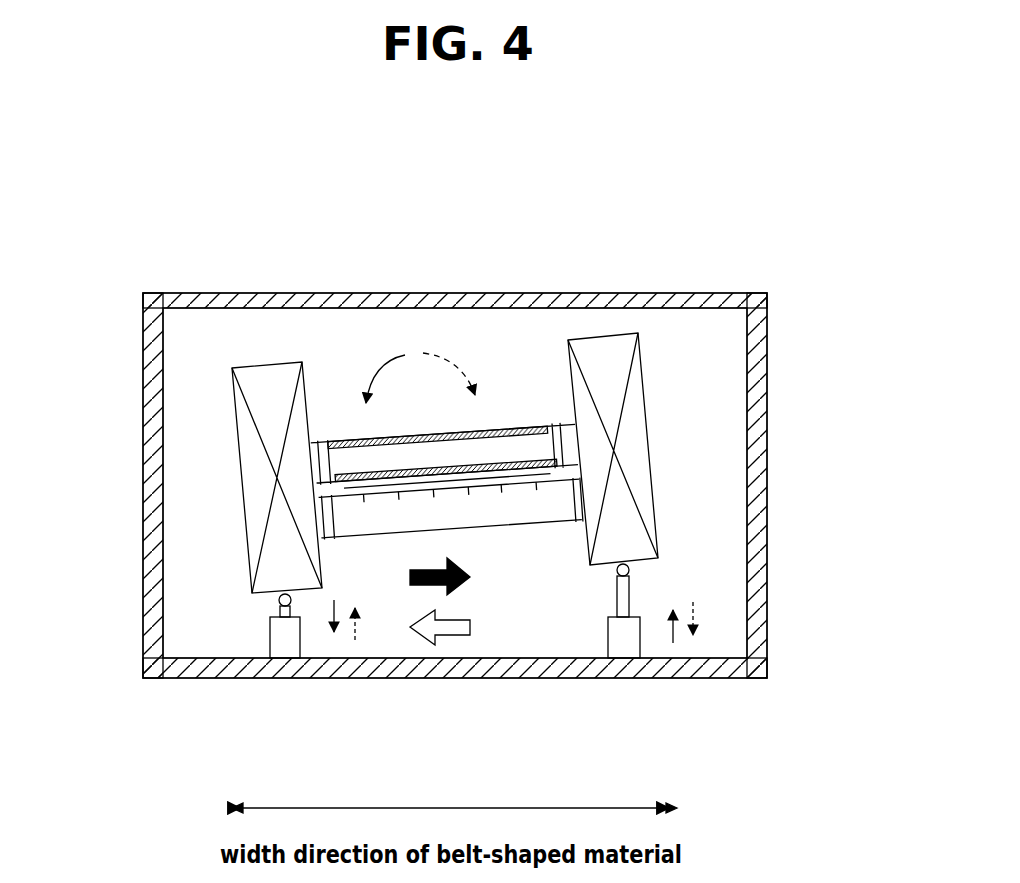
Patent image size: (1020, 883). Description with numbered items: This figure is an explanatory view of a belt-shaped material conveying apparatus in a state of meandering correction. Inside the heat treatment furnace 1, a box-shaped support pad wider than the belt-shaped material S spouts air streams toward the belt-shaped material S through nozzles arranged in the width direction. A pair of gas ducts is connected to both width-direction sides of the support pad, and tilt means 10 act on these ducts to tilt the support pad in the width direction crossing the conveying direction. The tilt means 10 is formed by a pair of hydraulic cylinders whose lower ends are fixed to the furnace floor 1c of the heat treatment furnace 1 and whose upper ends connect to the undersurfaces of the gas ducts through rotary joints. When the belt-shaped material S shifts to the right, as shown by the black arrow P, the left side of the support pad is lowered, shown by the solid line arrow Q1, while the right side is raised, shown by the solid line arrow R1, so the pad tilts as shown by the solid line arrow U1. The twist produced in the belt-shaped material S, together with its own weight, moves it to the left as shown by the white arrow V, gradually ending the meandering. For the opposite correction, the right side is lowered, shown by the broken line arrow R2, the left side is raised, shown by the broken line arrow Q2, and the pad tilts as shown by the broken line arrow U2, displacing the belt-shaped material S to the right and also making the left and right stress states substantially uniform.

The heat treatment furnace 1 is at (424, 424).
The furnace floor 1c is at (523, 657).
The tilt means 10 is at (190, 643).
The belt-shaped material S is at (413, 487).
The solid line arrow U1 is at (378, 367).
The broken line arrow U2 is at (458, 363).
The black arrow P is at (478, 588).
The white arrow V is at (450, 637).
The solid line arrow Q1 is at (323, 613).
The broken line arrow Q2 is at (356, 638).
The solid line arrow R1 is at (675, 637).
The broken line arrow R2 is at (697, 606).